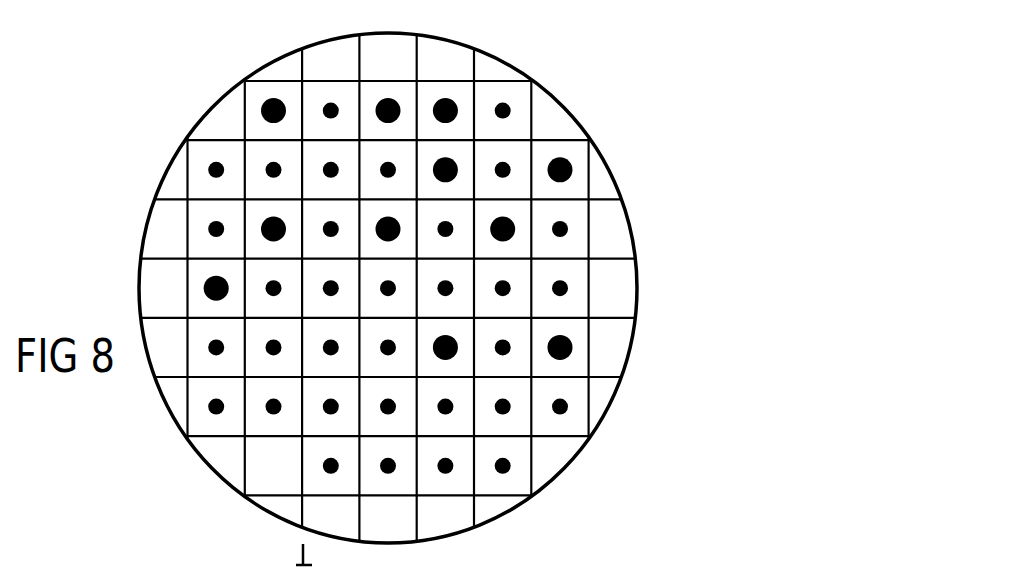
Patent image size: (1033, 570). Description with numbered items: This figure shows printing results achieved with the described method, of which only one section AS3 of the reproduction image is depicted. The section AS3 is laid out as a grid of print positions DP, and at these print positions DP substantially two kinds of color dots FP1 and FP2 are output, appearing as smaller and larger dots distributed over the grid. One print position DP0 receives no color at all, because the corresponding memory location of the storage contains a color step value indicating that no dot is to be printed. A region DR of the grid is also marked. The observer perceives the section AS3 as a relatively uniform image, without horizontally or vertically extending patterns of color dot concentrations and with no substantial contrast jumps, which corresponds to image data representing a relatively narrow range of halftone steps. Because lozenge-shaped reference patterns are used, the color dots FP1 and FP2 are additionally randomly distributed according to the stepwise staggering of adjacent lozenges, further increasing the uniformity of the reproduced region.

The section of the reproduction image AS3 is at (572, 116).
The color dot FP1 is at (568, 230).
The color dot FP2 is at (573, 350).
The print position DP is at (582, 248).
The dot region / exposure region DR is at (592, 407).
The print position without color DP0 is at (258, 467).